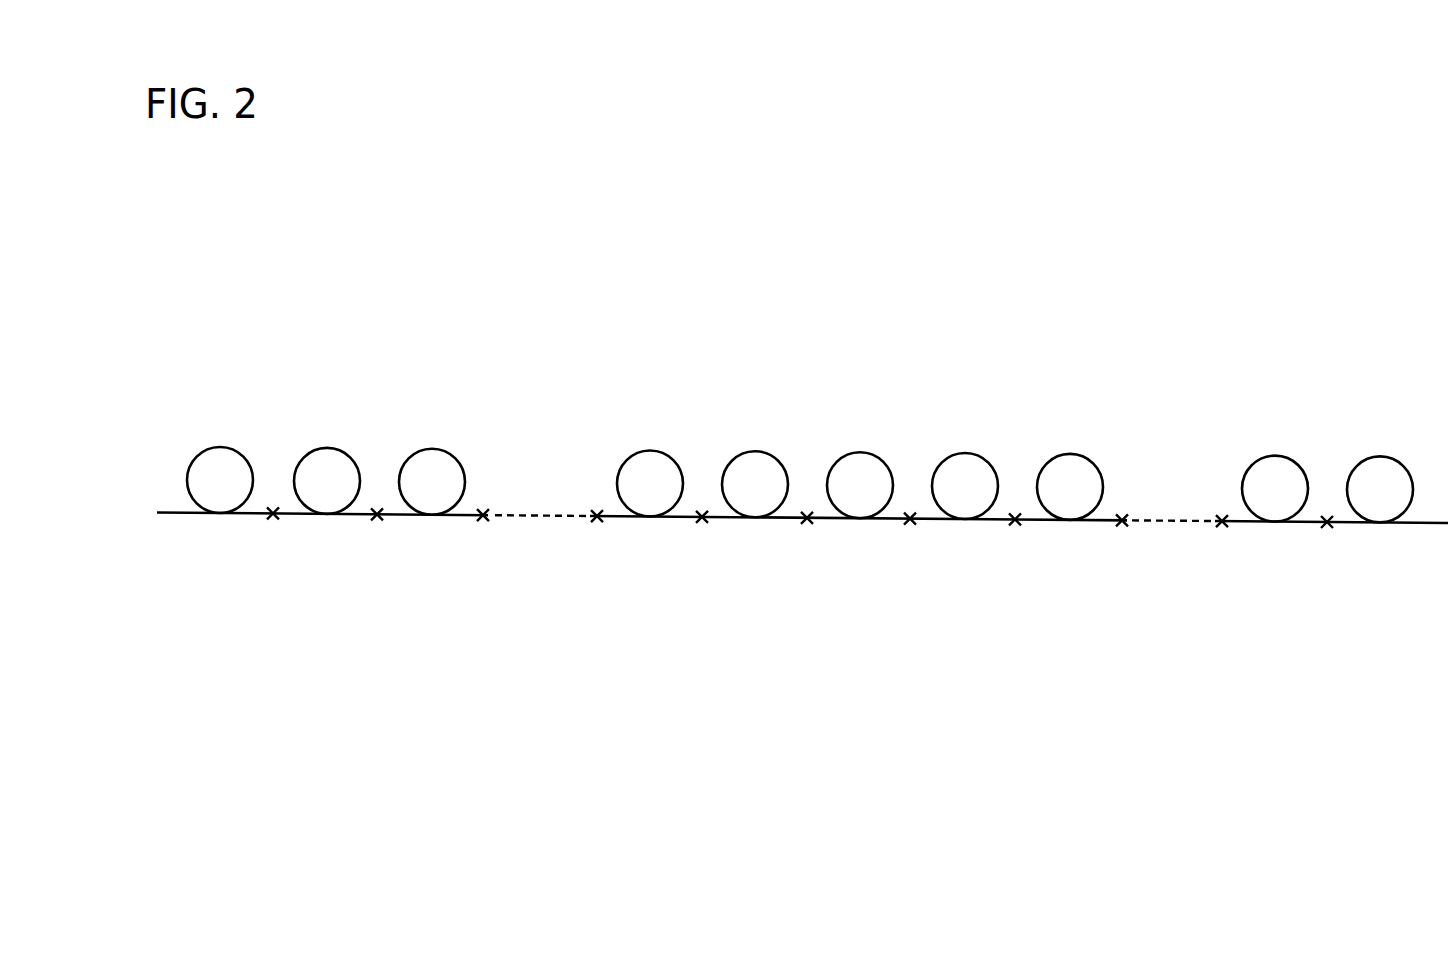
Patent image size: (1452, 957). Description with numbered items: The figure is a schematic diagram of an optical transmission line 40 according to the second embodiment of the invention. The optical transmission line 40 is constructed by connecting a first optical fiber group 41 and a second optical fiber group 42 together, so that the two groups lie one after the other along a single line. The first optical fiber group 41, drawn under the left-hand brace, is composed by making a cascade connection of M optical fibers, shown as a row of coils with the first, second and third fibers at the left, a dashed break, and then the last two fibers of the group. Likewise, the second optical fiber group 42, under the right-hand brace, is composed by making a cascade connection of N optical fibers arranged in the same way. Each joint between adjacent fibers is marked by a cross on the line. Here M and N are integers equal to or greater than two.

The optical transmission line 40 is at (940, 266).
The first optical fiber group 41 is at (790, 375).
The second optical fiber group 42 is at (1417, 380).